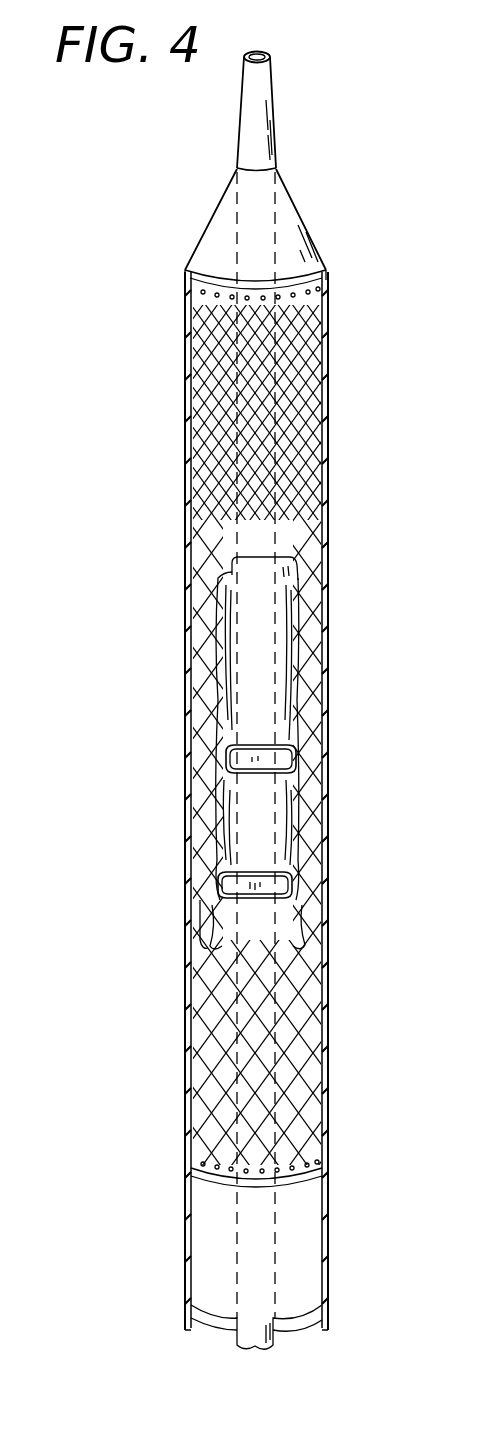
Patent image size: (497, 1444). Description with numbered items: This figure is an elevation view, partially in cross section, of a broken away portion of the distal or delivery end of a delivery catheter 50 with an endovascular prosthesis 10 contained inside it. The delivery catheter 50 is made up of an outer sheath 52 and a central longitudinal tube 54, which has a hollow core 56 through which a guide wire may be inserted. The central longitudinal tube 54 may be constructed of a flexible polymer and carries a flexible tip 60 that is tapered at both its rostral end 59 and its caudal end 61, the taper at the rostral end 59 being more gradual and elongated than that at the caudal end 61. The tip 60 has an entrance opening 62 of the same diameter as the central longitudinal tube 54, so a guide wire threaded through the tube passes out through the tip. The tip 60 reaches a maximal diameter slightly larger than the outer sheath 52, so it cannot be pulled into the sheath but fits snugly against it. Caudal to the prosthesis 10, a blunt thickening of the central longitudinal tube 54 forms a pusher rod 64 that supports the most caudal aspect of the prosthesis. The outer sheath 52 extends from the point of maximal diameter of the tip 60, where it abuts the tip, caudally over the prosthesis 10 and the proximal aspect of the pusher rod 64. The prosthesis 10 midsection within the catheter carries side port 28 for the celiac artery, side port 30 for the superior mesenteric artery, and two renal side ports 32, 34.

The endovascular prosthesis 10 is at (290, 379).
The side port 28 is at (285, 692).
The side port 30 is at (282, 818).
The renal side port 32 is at (197, 875).
The renal side port 34 is at (314, 873).
The delivery catheter 50 is at (329, 1101).
The outer sheath 52 is at (327, 1022).
The central longitudinal tube 54 is at (276, 1332).
The hollow core 56 is at (262, 56).
The rostral end 59 is at (300, 210).
The flexible tip 60 is at (322, 250).
The caudal end 61 is at (318, 297).
The entrance opening 62 is at (283, 165).
The pusher rod 64 is at (318, 1180).